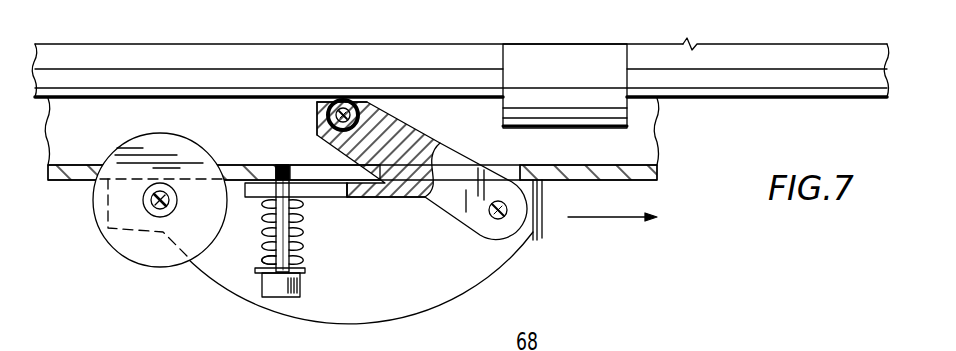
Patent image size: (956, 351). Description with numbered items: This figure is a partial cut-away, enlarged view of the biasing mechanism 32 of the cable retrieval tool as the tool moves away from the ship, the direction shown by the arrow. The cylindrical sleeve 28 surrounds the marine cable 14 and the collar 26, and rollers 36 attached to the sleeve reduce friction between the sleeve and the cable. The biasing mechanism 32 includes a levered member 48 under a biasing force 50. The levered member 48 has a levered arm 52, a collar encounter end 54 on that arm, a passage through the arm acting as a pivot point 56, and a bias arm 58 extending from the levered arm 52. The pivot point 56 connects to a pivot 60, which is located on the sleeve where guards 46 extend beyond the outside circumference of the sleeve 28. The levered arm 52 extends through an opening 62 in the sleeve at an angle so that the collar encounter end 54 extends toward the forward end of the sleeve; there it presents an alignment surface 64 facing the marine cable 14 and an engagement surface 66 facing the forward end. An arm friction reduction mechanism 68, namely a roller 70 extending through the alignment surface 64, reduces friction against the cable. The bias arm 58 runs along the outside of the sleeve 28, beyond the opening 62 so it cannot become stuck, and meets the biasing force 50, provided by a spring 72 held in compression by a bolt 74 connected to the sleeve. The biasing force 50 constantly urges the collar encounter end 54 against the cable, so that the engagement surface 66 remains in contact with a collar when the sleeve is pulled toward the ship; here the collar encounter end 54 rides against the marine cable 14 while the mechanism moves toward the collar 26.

The marine cable 14 is at (97, 87).
The collar 26 is at (577, 55).
The sleeve 28 is at (664, 185).
The biasing mechanism 32 is at (341, 199).
The rollers 36 is at (95, 222).
The guards 46 is at (408, 320).
The levered member 48 is at (397, 199).
The biasing force 50 is at (256, 240).
The levered arm 52 is at (420, 133).
The collar encounter end 54 is at (320, 100).
The pivot point 56 is at (506, 216).
The bias arm 58 is at (320, 198).
The pivot 60 is at (498, 220).
The opening 62 is at (310, 175).
The alignment surface 64 is at (365, 98).
The engagement surface 66 is at (317, 118).
The arm friction reduction mechanism 68 is at (334, 98).
The roller 70 is at (347, 98).
The spring 72 is at (256, 261).
The bolt 74 is at (273, 297).